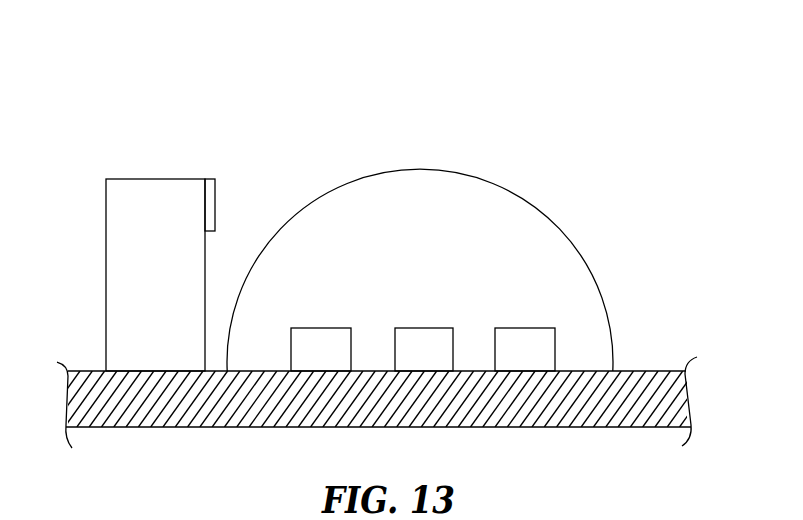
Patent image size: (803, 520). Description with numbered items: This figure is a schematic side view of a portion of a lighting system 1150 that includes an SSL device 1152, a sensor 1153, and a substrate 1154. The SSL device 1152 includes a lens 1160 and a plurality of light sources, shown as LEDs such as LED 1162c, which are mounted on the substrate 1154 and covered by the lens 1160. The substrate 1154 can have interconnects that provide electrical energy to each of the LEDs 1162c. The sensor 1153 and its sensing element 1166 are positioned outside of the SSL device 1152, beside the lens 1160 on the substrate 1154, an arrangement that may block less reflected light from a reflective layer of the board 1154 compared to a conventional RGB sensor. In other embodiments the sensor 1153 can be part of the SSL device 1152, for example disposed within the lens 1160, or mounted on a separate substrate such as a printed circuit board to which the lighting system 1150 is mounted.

The lighting system 1150 is at (620, 123).
The SSL device 1152 is at (590, 270).
The sensor 1153 is at (118, 179).
The substrate 1154 is at (638, 371).
The lens 1160 is at (366, 176).
The LED 1162c is at (318, 328).
The sensing element 1166 is at (212, 179).